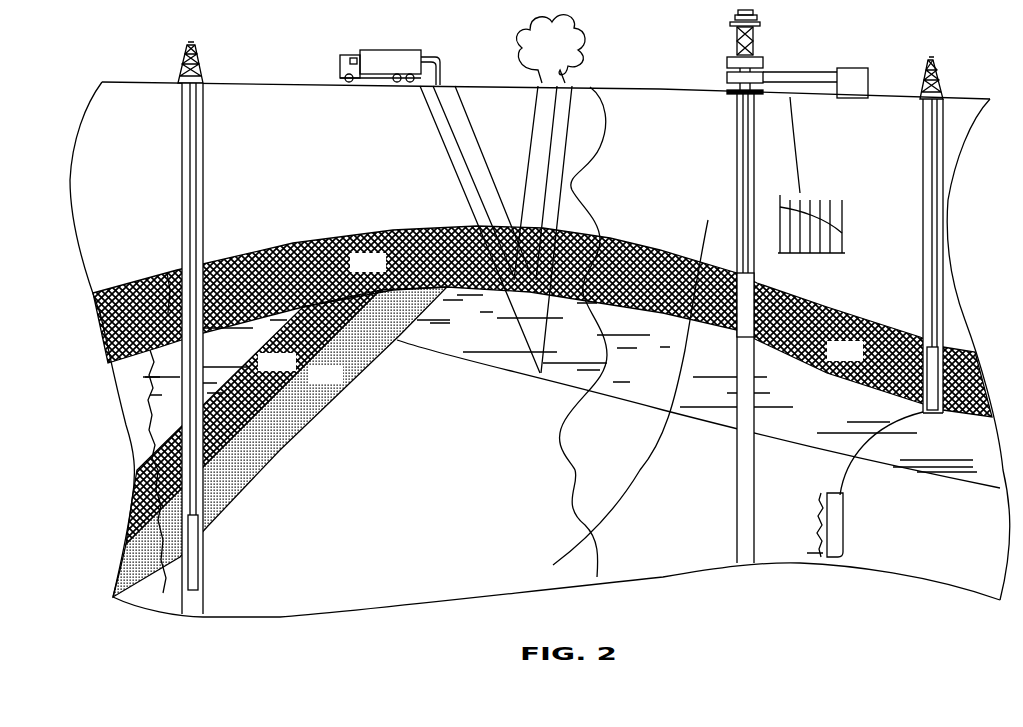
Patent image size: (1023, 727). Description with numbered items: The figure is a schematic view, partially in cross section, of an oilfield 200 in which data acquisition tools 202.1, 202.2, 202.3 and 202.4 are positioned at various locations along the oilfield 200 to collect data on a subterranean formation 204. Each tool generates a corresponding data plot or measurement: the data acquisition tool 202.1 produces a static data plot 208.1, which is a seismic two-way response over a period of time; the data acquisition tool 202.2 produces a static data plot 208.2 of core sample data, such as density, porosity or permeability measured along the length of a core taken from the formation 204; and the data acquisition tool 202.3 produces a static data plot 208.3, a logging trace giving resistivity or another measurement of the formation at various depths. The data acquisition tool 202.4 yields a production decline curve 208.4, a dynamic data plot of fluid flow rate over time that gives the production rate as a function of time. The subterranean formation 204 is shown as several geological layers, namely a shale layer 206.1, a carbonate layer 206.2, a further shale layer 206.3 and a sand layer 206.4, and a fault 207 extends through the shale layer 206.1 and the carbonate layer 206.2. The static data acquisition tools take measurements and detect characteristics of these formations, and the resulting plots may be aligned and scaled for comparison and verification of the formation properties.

The oilfield 200 is at (893, 68).
The data acquisition tool 202.1 is at (362, 50).
The data acquisition tool 202.2 is at (945, 414).
The data acquisition tool 202.3 is at (200, 559).
The data acquisition tool 202.4 is at (737, 343).
The subterranean formation 204 is at (440, 432).
The shale layer 206.1 is at (383, 270).
The carbonate layer 206.2 is at (242, 355).
The shale layer 206.3 is at (293, 370).
The sand layer 206.4 is at (340, 382).
The fault 207 is at (703, 232).
The static data plot 208.1 is at (577, 464).
The static data plot 208.2 is at (821, 495).
The static data plot 208.3 is at (152, 390).
The production decline curve 208.4 is at (817, 253).